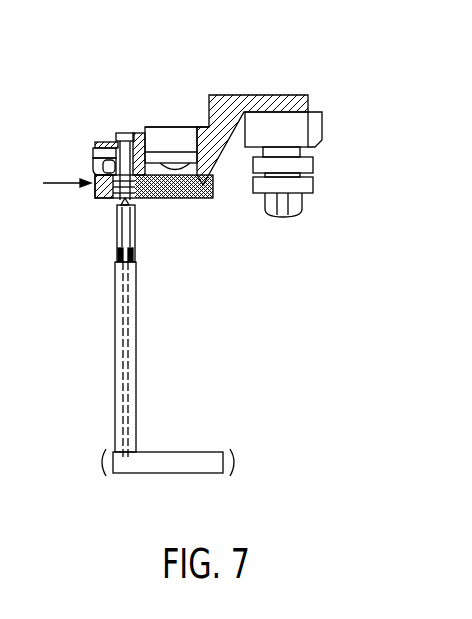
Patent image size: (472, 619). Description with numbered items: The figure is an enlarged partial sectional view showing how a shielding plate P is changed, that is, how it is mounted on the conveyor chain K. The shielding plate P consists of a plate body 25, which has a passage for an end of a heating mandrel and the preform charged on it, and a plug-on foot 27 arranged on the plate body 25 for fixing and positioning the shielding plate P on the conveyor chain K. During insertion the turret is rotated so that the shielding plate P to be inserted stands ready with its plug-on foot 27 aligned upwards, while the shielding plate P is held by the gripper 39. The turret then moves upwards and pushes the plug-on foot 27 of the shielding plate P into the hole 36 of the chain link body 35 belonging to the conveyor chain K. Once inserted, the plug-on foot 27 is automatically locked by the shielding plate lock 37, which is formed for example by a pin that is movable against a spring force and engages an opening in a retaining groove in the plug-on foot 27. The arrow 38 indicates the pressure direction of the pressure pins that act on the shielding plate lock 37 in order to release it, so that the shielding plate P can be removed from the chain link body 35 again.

The plate body 25 is at (187, 452).
The plug-on foot 27 is at (130, 301).
The chain link body 35 is at (224, 166).
The hole 36 is at (126, 131).
The shielding plate lock 37 is at (107, 199).
The arrow 38 is at (57, 190).
The gripper 39 is at (237, 463).
The conveyor chain K is at (340, 130).
The shielding plate P is at (168, 335).